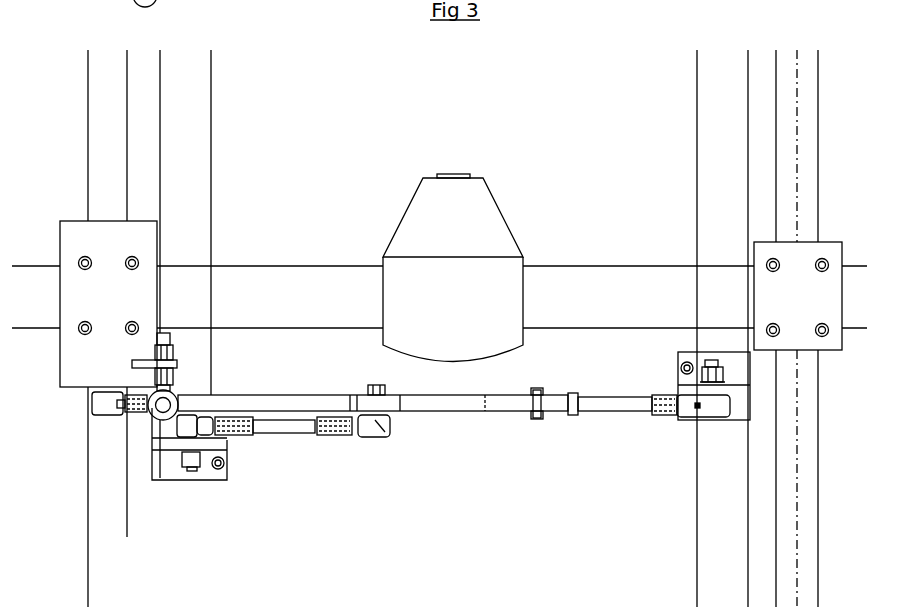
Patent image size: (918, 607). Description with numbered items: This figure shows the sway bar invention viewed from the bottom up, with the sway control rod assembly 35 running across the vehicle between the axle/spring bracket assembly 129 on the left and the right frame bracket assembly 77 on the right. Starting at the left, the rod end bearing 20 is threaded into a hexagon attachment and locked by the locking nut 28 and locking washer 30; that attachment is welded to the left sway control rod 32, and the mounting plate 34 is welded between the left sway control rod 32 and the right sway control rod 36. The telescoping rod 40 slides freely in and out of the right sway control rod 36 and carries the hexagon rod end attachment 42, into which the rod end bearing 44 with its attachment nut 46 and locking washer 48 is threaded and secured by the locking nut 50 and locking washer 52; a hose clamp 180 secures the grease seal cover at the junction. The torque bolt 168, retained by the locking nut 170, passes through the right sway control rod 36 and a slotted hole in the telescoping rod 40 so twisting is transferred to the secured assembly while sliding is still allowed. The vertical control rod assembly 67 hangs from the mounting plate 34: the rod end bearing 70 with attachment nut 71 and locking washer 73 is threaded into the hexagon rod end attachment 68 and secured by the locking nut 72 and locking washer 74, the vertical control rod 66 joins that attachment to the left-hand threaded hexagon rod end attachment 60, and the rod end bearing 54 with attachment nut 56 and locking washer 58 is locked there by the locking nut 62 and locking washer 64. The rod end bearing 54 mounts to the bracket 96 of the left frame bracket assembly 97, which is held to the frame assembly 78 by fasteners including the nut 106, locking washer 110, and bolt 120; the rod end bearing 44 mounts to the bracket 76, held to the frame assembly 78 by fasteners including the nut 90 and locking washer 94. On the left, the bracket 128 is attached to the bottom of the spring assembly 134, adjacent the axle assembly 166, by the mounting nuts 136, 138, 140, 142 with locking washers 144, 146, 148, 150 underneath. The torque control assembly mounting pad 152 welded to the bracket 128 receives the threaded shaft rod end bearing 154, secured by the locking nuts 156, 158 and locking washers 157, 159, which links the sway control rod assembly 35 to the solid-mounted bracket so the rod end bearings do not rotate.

The rod end bearing 20 is at (92, 402).
The locking nut 28 is at (137, 415).
The locking washer 30 is at (147, 387).
The left sway control rod 32 is at (332, 395).
The mounting plate 34 is at (361, 393).
The sway control rod assembly 35 is at (460, 413).
The right sway control rod 36 is at (505, 405).
The telescoping rod 40 is at (618, 411).
The hexagon rod end attachment 42 is at (665, 395).
The rod end bearing 44 is at (753, 422).
The attachment nut 46 is at (712, 360).
The locking washer 48 is at (708, 367).
The locking nut 50 is at (687, 418).
The locking washer 52 is at (675, 420).
The rod end bearing 54 is at (208, 412).
The attachment nut 56 is at (190, 458).
The locking washer 58 is at (185, 445).
The hexagon rod end attachment 60 is at (257, 412).
The locking nut 62 is at (220, 470).
The locking washer 64 is at (228, 438).
The vertical control rod 66 is at (280, 436).
The vertical control rod assembly 67 is at (273, 436).
The hexagon rod end attachment 68 is at (333, 437).
The rod end bearing 70 is at (397, 435).
The attachment nut 71 is at (385, 393).
The locking nut 72 is at (353, 437).
The locking washer 73 is at (393, 393).
The locking washer 74 is at (345, 437).
The bracket 76 is at (735, 407).
The right frame bracket assembly 77 is at (695, 420).
The frame assembly 78 is at (195, 98).
The nut 90 is at (681, 366).
The locking washer 94 is at (677, 362).
The bracket 96 is at (188, 470).
The left frame bracket assembly 97 is at (198, 481).
The nut 106 is at (217, 480).
The locking washer 110 is at (215, 480).
The bolt 120 is at (182, 0).
The bracket 128 is at (118, 243).
The axle/spring bracket assembly 129 is at (78, 217).
The spring assembly 134 is at (99, 105).
The mounting nut 136 is at (84, 334).
The mounting nut 138 is at (157, 265).
The mounting nut 140 is at (81, 258).
The mounting nut 142 is at (136, 258).
The locking washer 144 is at (83, 322).
The locking washer 146 is at (82, 258).
The locking washer 148 is at (158, 208).
The locking washer 150 is at (134, 323).
The torque control assembly mounting pad 152 is at (134, 360).
The threaded shaft rod end bearing 154 is at (135, 428).
The locking nut 156 is at (168, 340).
The locking washer 157 is at (175, 363).
The locking nut 158 is at (173, 374).
The locking washer 159 is at (180, 367).
The axle assembly 166 is at (600, 290).
The torque bolt 168 is at (535, 419).
The locking nut 170 is at (535, 389).
The hose clamp 180 is at (147, 422).